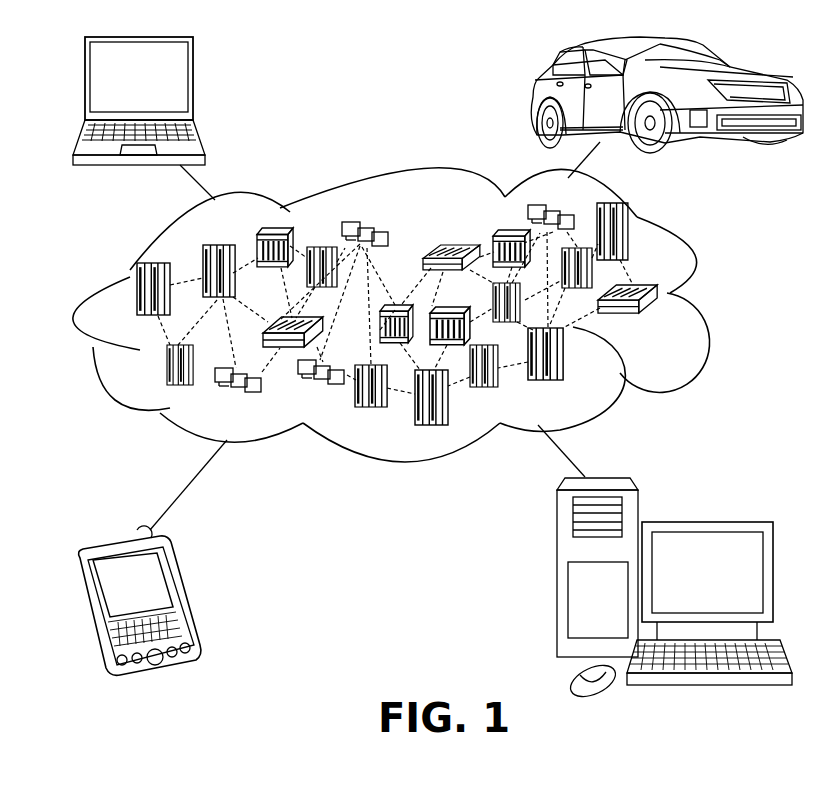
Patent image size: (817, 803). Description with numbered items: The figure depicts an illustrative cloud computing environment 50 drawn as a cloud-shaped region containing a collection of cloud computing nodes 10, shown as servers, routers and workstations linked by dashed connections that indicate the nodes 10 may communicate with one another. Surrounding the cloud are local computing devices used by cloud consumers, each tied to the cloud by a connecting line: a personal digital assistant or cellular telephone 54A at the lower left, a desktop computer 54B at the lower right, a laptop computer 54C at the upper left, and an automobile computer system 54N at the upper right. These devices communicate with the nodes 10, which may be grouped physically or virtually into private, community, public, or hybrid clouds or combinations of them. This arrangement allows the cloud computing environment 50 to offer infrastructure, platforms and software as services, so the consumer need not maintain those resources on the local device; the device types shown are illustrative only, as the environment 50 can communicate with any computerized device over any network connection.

The cloud computing nodes 10 is at (699, 338).
The cloud computing environment 50 is at (707, 296).
The personal digital assistant or cellular telephone 54A is at (183, 597).
The desktop computer 54B is at (703, 522).
The laptop computer 54C is at (197, 84).
The automobile computer system 54N is at (535, 95).